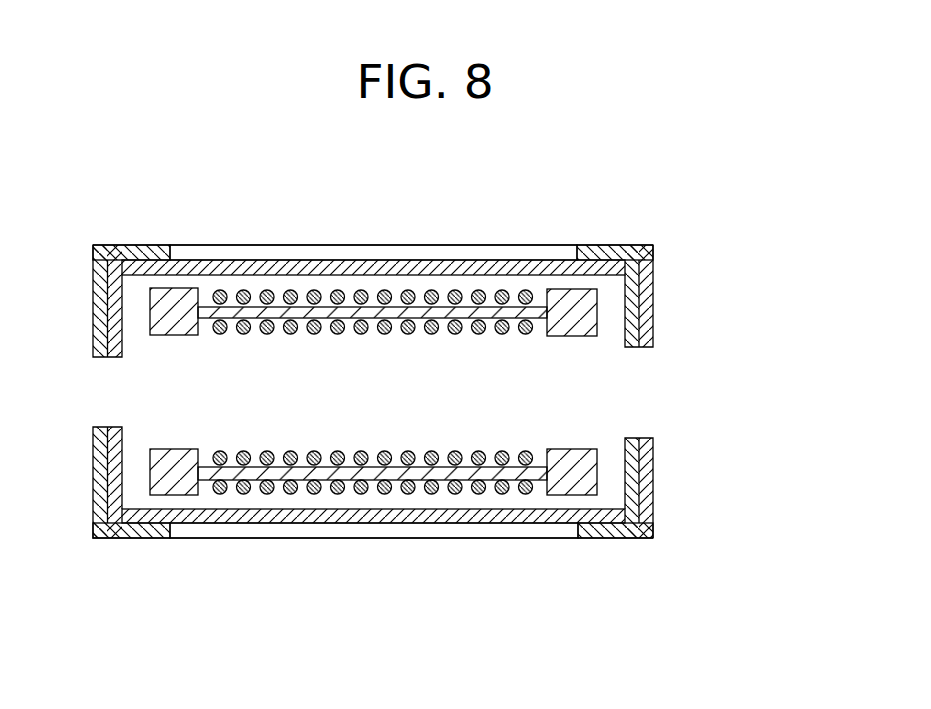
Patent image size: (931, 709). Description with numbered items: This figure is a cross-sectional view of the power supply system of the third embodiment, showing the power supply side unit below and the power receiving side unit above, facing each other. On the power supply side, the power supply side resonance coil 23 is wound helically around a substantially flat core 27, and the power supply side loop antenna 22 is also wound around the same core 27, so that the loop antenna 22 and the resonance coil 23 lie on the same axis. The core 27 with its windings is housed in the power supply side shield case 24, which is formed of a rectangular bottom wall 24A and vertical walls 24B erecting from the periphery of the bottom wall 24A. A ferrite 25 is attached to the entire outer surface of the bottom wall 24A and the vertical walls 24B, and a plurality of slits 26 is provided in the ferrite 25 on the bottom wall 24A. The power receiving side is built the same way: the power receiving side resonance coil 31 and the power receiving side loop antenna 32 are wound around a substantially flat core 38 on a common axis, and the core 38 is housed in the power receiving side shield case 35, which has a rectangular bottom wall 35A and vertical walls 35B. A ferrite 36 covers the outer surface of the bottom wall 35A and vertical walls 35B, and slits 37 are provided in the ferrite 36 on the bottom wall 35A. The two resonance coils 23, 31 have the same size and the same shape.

The power supply side loop antenna 22 is at (523, 489).
The power supply side resonance coil 23 is at (384, 489).
The power supply side shield case 24 is at (437, 483).
The bottom wall 24A is at (600, 514).
The vertical wall 24B is at (643, 483).
The ferrite 25 is at (605, 535).
The slits 26 is at (573, 530).
The core 27 is at (177, 482).
The power receiving side resonance coil 31 is at (456, 295).
The power receiving side loop antenna 32 is at (523, 295).
The power receiving side shield case 35 is at (436, 275).
The bottom wall 35A is at (597, 263).
The vertical wall 35B is at (633, 305).
The ferrite 36 is at (137, 252).
The slits 37 is at (565, 250).
The core 38 is at (177, 300).